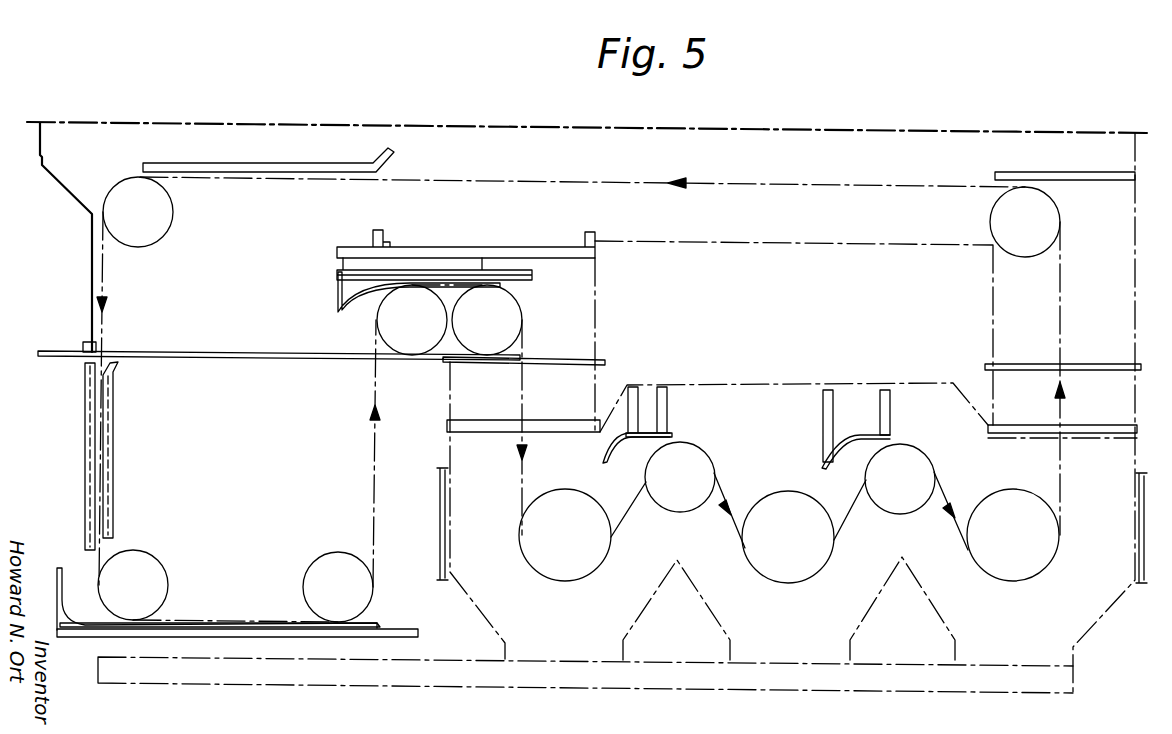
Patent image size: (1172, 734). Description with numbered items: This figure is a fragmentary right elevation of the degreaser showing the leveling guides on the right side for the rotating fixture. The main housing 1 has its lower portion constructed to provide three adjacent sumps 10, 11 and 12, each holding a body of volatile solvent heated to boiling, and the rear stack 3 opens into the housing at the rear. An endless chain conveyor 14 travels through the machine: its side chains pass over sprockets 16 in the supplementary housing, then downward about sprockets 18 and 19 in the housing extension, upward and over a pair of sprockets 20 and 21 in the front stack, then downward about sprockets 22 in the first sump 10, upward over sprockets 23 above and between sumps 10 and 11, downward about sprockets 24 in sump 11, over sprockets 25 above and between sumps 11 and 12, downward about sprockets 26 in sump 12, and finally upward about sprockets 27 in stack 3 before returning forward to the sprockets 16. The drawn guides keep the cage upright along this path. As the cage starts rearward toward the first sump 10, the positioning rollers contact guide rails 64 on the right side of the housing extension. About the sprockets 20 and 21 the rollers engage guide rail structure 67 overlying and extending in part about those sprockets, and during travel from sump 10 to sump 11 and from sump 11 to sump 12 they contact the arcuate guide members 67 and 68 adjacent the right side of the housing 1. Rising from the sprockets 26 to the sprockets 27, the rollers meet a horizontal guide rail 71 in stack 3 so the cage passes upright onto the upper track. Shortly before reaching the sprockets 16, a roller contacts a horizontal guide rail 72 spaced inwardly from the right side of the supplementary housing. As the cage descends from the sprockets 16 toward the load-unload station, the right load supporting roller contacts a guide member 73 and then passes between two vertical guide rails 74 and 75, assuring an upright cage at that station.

The main housing 1 is at (777, 393).
The rear stack 3 is at (1137, 263).
The first sump 10 is at (580, 473).
The second sump 11 is at (790, 471).
The third sump 12 is at (1020, 473).
The endless chain conveyor 14 is at (757, 183).
The sprockets 16 is at (175, 213).
The sprockets 18 is at (162, 575).
The sprockets 19 is at (304, 582).
The sprockets 20 is at (386, 329).
The sprockets 21 is at (513, 318).
The sprockets 22 is at (553, 572).
The sprockets 23 is at (677, 510).
The sprockets 24 is at (803, 578).
The sprockets 25 is at (897, 512).
The sprockets 26 is at (1022, 577).
The sprockets 27 is at (1053, 237).
The guide rails 64 is at (230, 632).
The guide rail structure 67 is at (405, 282).
The arcuate guide member 68 is at (852, 438).
The horizontal guide rail 71 is at (1085, 172).
The horizontal guide rail 72 is at (225, 163).
The guide member 73 is at (90, 286).
The vertical guide rail 74 is at (88, 402).
The vertical guide rail 75 is at (110, 410).